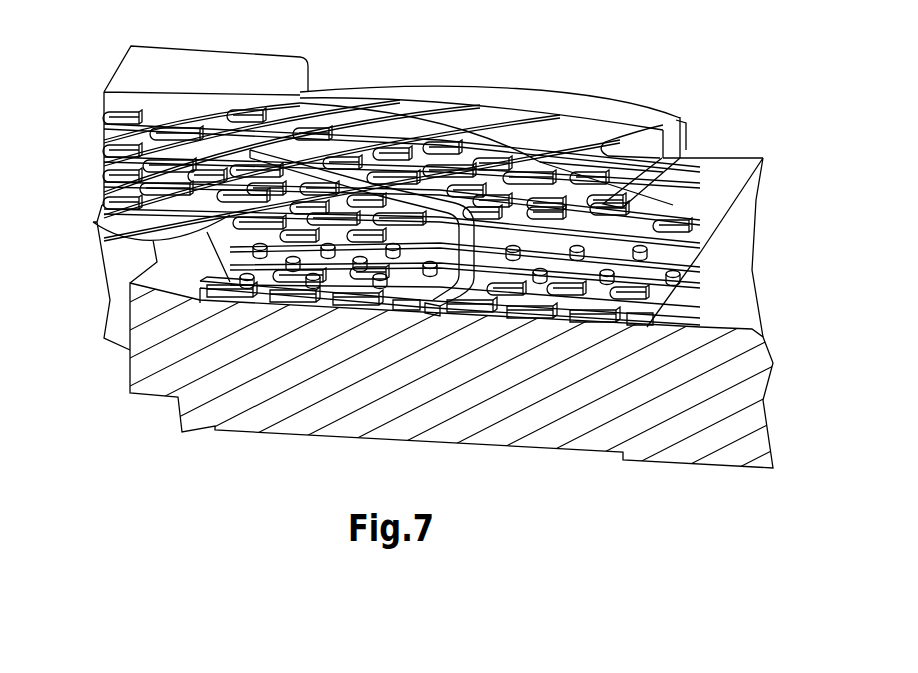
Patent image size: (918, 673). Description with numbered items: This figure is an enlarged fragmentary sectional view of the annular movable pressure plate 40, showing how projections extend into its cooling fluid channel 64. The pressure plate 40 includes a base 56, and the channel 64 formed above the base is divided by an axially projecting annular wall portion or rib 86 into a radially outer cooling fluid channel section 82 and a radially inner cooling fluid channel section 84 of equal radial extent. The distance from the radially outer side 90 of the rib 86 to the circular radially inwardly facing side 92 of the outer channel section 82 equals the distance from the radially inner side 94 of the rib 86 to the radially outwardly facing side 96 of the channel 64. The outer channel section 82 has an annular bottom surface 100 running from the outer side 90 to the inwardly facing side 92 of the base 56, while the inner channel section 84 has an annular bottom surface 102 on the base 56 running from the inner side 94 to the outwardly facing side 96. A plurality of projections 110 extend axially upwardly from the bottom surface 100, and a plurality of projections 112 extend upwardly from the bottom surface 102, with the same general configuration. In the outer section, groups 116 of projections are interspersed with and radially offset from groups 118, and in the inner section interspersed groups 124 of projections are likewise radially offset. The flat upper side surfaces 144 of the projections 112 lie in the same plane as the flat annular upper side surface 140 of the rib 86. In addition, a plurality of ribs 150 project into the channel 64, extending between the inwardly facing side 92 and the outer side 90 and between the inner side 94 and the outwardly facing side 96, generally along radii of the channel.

The annular movable pressure plate 40 is at (641, 98).
The base 56 is at (623, 387).
The cooling fluid channel 64 is at (370, 135).
The radially outer cooling fluid channel section 82 is at (705, 220).
The radially inner cooling fluid channel section 84 is at (133, 212).
The annular wall portion or rib 86 is at (424, 324).
The radially outer side 90 is at (455, 322).
The radially inwardly facing side 92 is at (680, 124).
The radially inner side 94 is at (392, 315).
The radially outwardly facing side 96 is at (207, 300).
The annular bottom surface 100 is at (657, 325).
The annular bottom surface 102 is at (232, 302).
The projections 110 is at (516, 152).
The projections 112 is at (298, 88).
The groups of projections 116 is at (416, 125).
The groups of projections 118 is at (636, 197).
The groups of projections 124 is at (229, 166).
The flat annular upper side surface 140 is at (490, 320).
The flat upper side surfaces 144 is at (101, 225).
The ribs 150 is at (640, 105).